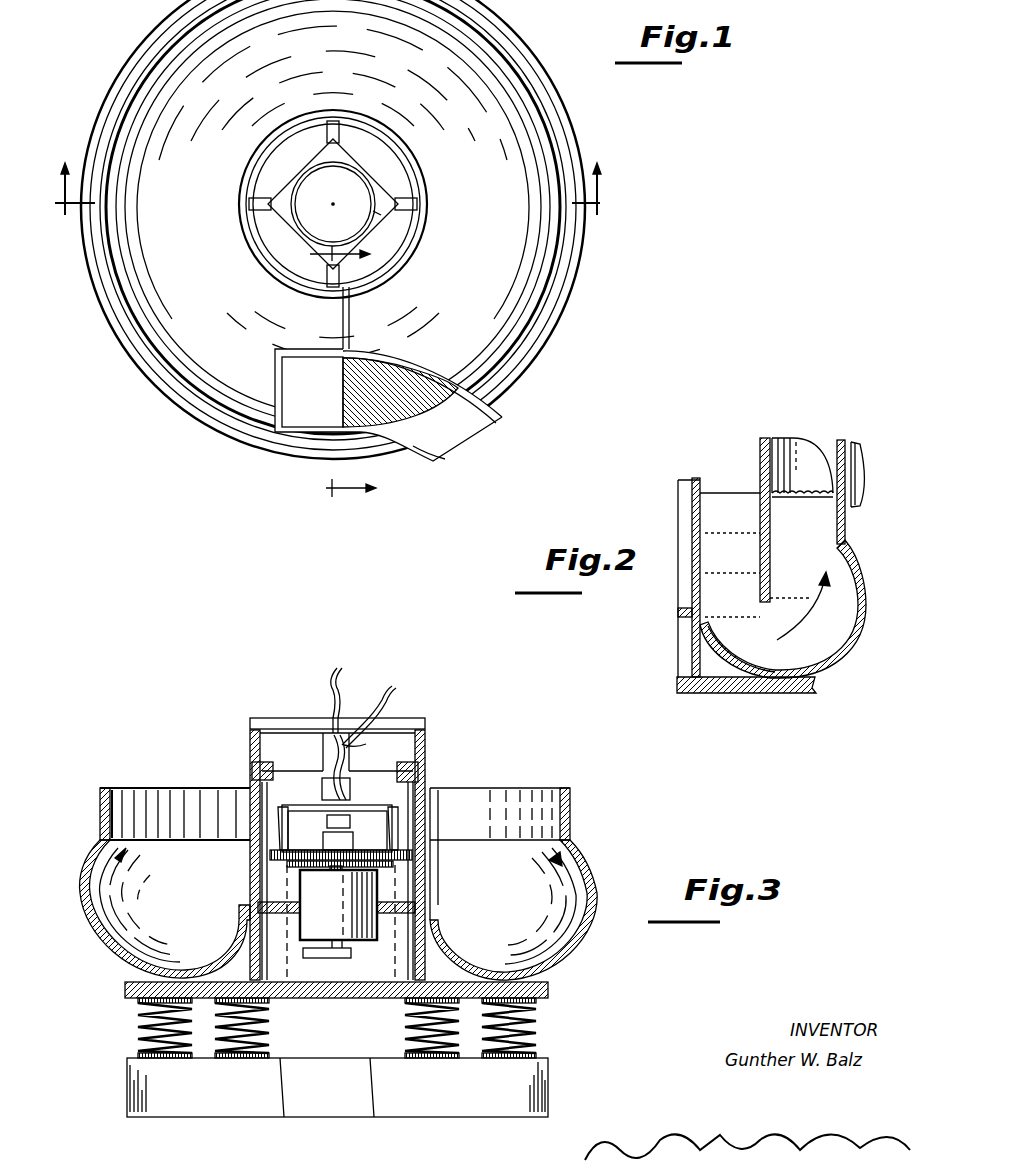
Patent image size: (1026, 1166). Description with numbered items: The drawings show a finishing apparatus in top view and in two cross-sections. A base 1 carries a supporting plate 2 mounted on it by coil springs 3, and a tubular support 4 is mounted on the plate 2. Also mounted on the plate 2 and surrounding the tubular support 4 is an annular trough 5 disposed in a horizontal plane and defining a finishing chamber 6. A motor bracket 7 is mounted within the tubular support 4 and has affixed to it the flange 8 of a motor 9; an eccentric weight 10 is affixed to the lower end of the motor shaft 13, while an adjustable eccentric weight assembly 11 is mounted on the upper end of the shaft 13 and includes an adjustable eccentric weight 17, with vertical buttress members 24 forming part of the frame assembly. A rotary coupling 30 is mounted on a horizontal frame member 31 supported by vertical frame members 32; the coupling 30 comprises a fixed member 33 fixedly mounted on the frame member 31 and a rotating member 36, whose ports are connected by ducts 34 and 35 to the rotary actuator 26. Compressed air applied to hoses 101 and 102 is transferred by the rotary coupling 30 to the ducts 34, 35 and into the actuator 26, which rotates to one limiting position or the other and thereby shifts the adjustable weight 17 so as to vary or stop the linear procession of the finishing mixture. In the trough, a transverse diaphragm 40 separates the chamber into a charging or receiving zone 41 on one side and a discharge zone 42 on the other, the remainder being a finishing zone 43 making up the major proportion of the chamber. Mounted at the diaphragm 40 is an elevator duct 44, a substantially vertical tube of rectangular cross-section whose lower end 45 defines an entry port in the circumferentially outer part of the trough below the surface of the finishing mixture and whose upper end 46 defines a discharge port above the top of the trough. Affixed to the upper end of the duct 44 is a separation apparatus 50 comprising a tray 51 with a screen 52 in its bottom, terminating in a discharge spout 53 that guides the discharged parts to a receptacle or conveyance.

In FIG. 3, the base 1 is at (330, 1100).
In FIG. 1, the supporting plate 2 is at (335, 374).
In FIG. 2, the supporting plate 2 is at (748, 683).
In FIG. 3, the supporting plate 2 is at (330, 998).
In FIG. 1, the coil springs 3 is at (325, 202).
In FIG. 3, the coil springs 3 is at (136, 1028).
In FIG. 1, the tubular support 4 is at (264, 156).
In FIG. 2, the tubular support 4 is at (692, 632).
In FIG. 3, the tubular support 4 is at (418, 958).
In FIG. 2, the annular trough 5 is at (824, 662).
In FIG. 3, the annular trough 5 is at (592, 860).
In FIG. 1, the finishing chamber 6 is at (132, 286).
In FIG. 2, the finishing chamber 6 is at (850, 628).
In FIG. 1, the motor bracket 7 is at (333, 121).
In FIG. 3, the motor bracket 7 is at (394, 914).
In FIG. 1, the flange 8 is at (369, 213).
In FIG. 3, the flange 8 is at (380, 902).
In FIG. 1, the motor 9 is at (338, 192).
In FIG. 3, the motor 9 is at (341, 897).
In FIG. 3, the eccentric weight 10 is at (304, 956).
In FIG. 3, the adjustable eccentric weight assembly 11 is at (404, 862).
In FIG. 3, the motor shaft 13 is at (347, 945).
In FIG. 3, the adjustable eccentric weight 17 is at (370, 848).
In FIG. 3, the vertical buttress members 24 is at (278, 824).
In FIG. 3, the rotary actuator 26 is at (322, 793).
In FIG. 3, the rotary coupling 30 is at (314, 748).
In FIG. 3, the horizontal frame member 31 is at (278, 706).
In FIG. 3, the vertical frame members 32 is at (250, 739).
In FIG. 3, the fixed member 33 is at (318, 720).
In FIG. 3, the duct 34 is at (335, 767).
In FIG. 3, the duct 35 is at (352, 761).
In FIG. 3, the rotating member 36 is at (367, 745).
In FIG. 1, the transverse diaphragm 40 is at (346, 320).
In FIG. 2, the transverse diaphragm 40 is at (712, 500).
In FIG. 1, the charging or receiving zone 41 is at (442, 322).
In FIG. 1, the discharge zone 42 is at (318, 330).
In FIG. 1, the finishing zone 43 is at (345, 32).
In FIG. 1, the elevator duct 44 is at (272, 372).
In FIG. 2, the elevator duct 44 is at (760, 561).
In FIG. 2, the lower end 45 is at (760, 608).
In FIG. 1, the upper end 46 is at (308, 349).
In FIG. 2, the upper end 46 is at (768, 440).
In FIG. 1, the separation apparatus 50 is at (413, 462).
In FIG. 2, the separation apparatus 50 is at (842, 430).
In FIG. 1, the tray 51 is at (440, 366).
In FIG. 2, the tray 51 is at (800, 445).
In FIG. 1, the screen 52 is at (404, 402).
In FIG. 2, the screen 52 is at (784, 494).
In FIG. 1, the discharge spout 53 is at (486, 420).
In FIG. 2, the discharge spout 53 is at (856, 502).
In FIG. 3, the hose 101 is at (342, 690).
In FIG. 3, the hose 102 is at (379, 707).